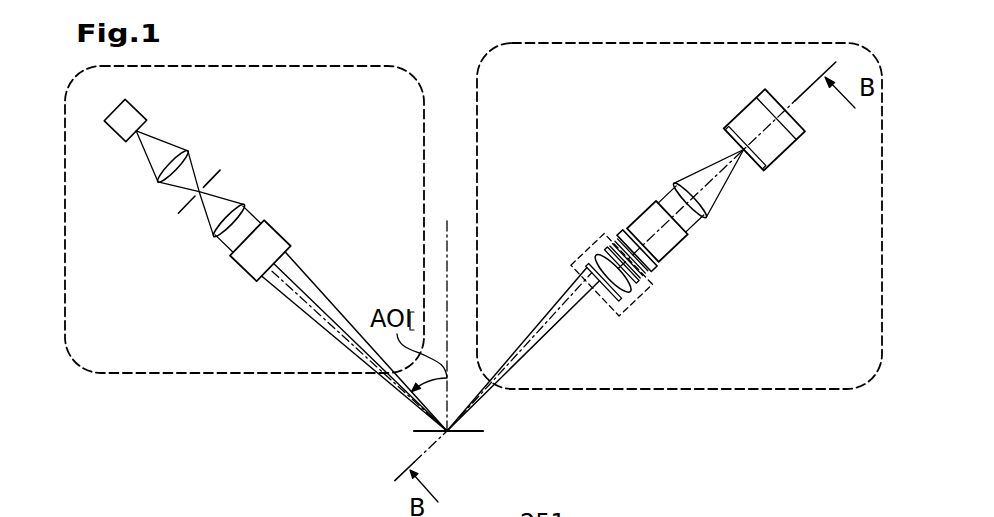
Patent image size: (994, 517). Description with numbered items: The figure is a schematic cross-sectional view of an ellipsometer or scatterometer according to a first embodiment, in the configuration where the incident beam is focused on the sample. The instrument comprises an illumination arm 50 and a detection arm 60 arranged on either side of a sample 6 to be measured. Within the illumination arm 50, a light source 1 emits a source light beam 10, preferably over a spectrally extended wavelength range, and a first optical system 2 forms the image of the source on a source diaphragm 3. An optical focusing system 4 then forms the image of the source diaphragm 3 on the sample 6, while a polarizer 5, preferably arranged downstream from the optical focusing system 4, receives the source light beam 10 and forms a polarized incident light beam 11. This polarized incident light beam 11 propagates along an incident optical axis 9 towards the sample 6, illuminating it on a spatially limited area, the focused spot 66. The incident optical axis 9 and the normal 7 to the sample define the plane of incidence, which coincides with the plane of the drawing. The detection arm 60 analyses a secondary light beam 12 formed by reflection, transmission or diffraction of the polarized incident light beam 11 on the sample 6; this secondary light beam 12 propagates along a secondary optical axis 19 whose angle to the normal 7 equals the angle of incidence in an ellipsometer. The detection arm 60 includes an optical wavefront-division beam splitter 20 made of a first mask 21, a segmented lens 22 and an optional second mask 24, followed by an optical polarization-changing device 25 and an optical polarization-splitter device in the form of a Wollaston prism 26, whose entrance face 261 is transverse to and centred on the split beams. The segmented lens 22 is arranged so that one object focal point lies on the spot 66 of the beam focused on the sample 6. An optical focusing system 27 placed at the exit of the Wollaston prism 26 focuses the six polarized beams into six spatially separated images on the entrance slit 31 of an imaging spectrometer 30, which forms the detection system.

The light source 1 is at (134, 109).
The source light beam 10 is at (165, 141).
The first optical system 2 is at (157, 182).
The source diaphragm 3 is at (197, 193).
The optical focusing system 4 is at (213, 237).
The polarizer 5 is at (275, 231).
The incident optical axis 9 is at (301, 294).
The polarized incident light beam 11 is at (321, 289).
The spot 66 is at (428, 405).
The sample 6 is at (463, 432).
The normal 7 is at (447, 236).
The secondary light beam 12 is at (566, 292).
The secondary optical axis 19 is at (559, 340).
The optical wavefront-division beam splitter 20 is at (597, 238).
The first mask 21 is at (626, 294).
The segmented lens 22 is at (624, 300).
The second mask 24 is at (640, 283).
The optical polarization-changing device 25 is at (612, 241).
The entrance face 261 is at (655, 269).
The Wollaston prism 26 is at (675, 243).
The optical focusing system 27 is at (706, 216).
The spectrometer 30 is at (776, 156).
The entrance slit 31 is at (739, 150).
The illumination arm 50 is at (345, 66).
The detection arm 60 is at (703, 43).